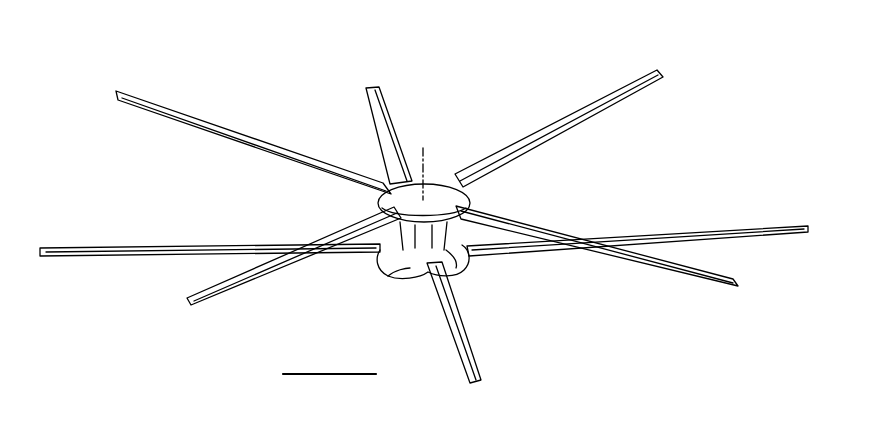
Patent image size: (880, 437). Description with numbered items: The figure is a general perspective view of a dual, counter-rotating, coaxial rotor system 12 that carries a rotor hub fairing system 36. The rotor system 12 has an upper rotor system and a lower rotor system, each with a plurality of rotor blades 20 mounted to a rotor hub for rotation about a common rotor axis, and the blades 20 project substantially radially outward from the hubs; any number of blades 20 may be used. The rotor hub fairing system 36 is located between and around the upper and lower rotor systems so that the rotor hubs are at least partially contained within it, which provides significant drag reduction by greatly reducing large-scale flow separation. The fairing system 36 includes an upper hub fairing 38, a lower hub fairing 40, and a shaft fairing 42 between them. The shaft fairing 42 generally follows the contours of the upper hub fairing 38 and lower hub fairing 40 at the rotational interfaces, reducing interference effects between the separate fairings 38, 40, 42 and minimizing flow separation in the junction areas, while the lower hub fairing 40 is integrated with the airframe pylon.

The counter-rotating coaxial rotor system 12 is at (311, 99).
The rotor blades 20 is at (548, 132).
The rotor hub fairing system 36 is at (357, 210).
The upper hub fairing 38 is at (437, 182).
The lower hub fairing 40 is at (396, 270).
The shaft fairing 42 is at (462, 260).